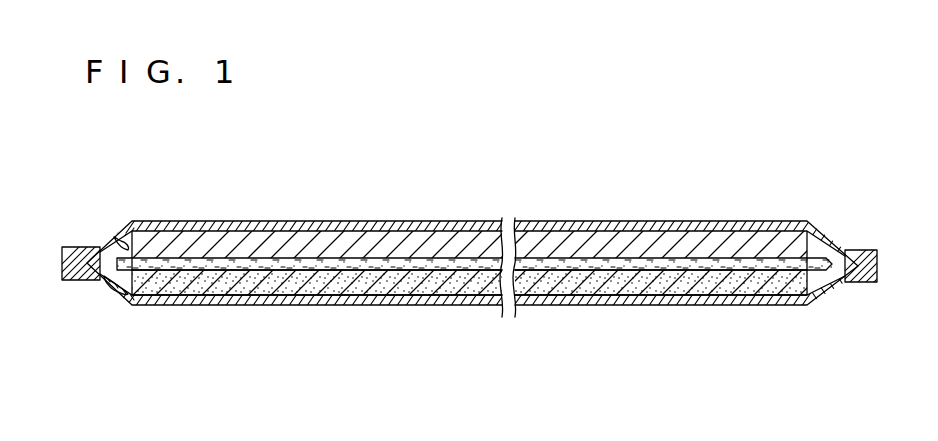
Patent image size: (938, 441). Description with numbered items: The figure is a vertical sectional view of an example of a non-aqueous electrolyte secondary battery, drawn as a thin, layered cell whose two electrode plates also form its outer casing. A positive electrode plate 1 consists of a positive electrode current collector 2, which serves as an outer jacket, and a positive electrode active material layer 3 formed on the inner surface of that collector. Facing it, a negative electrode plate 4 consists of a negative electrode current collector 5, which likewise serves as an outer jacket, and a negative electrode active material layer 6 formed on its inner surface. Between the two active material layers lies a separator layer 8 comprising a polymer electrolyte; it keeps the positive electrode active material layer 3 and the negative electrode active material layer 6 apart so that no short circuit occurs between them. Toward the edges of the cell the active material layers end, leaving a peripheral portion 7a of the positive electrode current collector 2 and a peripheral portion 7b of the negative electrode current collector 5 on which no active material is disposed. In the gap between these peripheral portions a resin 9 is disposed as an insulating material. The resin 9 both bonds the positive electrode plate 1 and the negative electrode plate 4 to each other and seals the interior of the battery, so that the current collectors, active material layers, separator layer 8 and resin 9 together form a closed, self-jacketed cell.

The positive electrode plate 1 is at (420, 368).
The positive electrode current collector 2 is at (343, 305).
The positive electrode active material layer 3 is at (410, 290).
The negative electrode plate 4 is at (332, 162).
The negative electrode current collector 5 is at (341, 221).
The negative electrode active material layer 6 is at (410, 245).
The peripheral portion of the positive electrode current collector 7a is at (113, 291).
The peripheral portion of the negative electrode current collector 7b is at (121, 240).
The separator layer 8 is at (690, 264).
The resin 9 is at (62, 260).